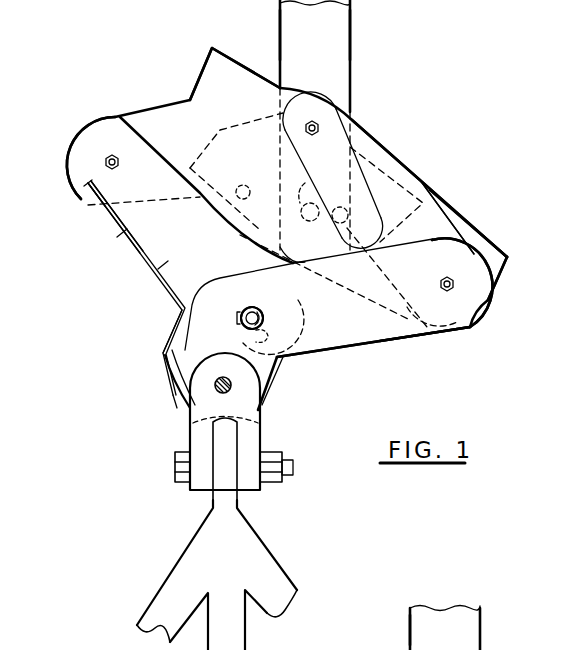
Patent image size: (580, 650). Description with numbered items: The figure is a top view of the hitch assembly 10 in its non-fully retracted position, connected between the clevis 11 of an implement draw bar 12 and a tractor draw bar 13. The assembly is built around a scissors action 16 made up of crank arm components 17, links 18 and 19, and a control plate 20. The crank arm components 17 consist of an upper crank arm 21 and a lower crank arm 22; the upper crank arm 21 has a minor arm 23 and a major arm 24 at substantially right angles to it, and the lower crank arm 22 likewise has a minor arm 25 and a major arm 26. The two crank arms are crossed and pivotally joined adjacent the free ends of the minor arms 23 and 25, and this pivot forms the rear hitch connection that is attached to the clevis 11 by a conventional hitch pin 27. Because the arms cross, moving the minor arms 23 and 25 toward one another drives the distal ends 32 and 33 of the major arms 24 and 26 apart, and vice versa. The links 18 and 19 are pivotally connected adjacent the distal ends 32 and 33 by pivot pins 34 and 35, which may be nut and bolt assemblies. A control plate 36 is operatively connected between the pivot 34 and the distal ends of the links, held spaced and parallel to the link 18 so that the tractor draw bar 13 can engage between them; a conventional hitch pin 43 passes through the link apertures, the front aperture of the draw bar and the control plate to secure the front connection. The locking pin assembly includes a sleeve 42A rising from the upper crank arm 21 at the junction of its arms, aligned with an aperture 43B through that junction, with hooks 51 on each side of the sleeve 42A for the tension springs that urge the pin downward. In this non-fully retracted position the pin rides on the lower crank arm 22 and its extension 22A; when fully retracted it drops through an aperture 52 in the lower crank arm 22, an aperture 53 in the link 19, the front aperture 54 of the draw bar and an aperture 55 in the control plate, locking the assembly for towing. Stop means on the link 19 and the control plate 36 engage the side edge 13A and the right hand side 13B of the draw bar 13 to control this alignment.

The hitch assembly 10 is at (148, 308).
The clevis 11 is at (190, 432).
The implement draw bar 12 is at (190, 552).
The tractor draw bar 13 is at (343, 63).
The side edge of the draw bar 13A is at (280, 15).
The right hand side of the draw bar 13B is at (352, 24).
The scissors action 16 is at (437, 152).
The crank arm components 17 is at (380, 372).
The link 18 is at (432, 226).
The link 19 is at (166, 80).
The control plate 20 is at (490, 228).
The upper crank arm 21 is at (405, 335).
The lower crank arm 22 is at (163, 266).
The extension 22A is at (141, 405).
The minor arm 23 is at (158, 367).
The major arm 24 is at (355, 338).
The minor arm 25 is at (168, 344).
The major arm 26 is at (110, 248).
The hitch pin 27 is at (233, 368).
The distal end 32 is at (478, 305).
The distal end 33 is at (87, 183).
The pivot pin 34 is at (445, 279).
The pivot pin 35 is at (116, 164).
The control plate 36 is at (512, 253).
The sleeve 42A is at (268, 314).
The hitch pin 43 is at (312, 136).
The aperture 43B is at (257, 311).
The hooks 51 is at (231, 317).
The aperture 52 is at (247, 342).
The aperture 53 is at (349, 216).
The front aperture 54 is at (306, 186).
The aperture 55 is at (243, 185).